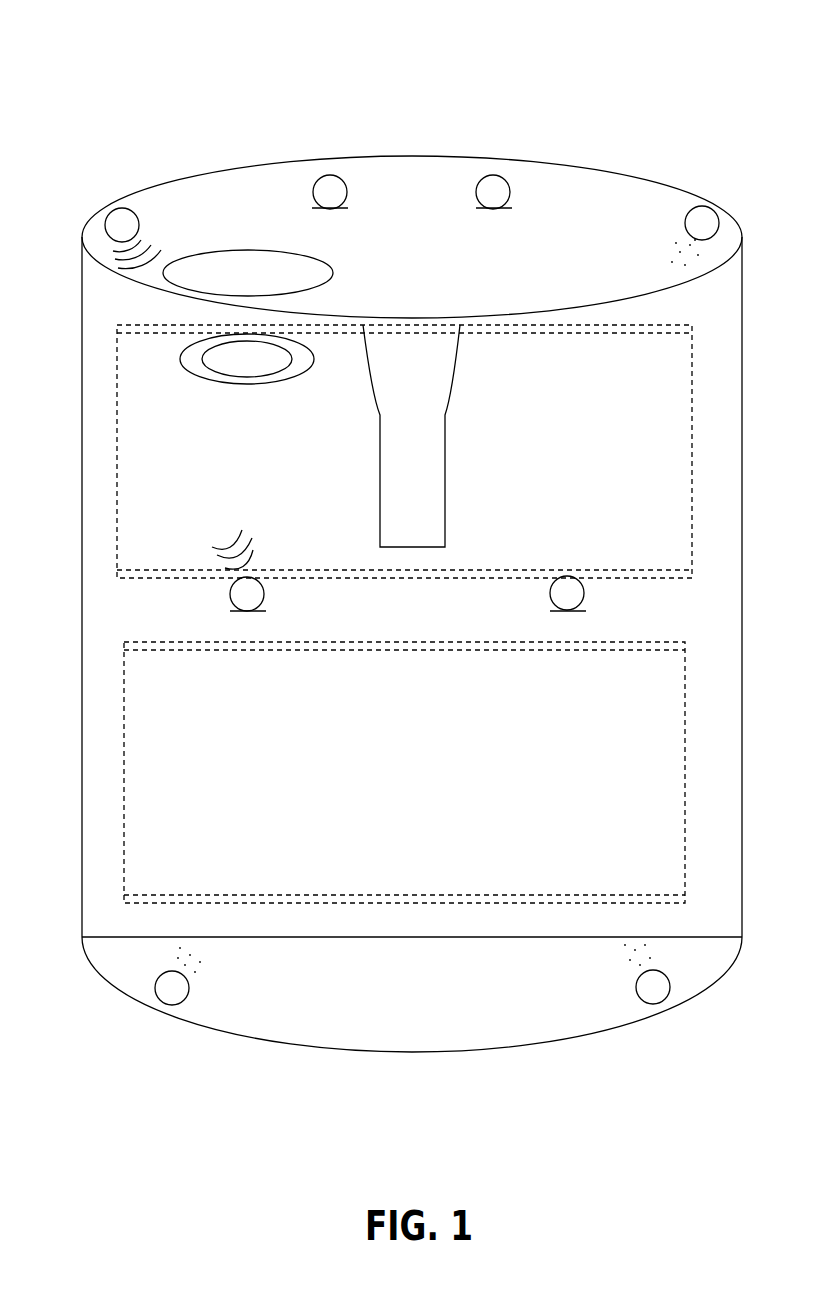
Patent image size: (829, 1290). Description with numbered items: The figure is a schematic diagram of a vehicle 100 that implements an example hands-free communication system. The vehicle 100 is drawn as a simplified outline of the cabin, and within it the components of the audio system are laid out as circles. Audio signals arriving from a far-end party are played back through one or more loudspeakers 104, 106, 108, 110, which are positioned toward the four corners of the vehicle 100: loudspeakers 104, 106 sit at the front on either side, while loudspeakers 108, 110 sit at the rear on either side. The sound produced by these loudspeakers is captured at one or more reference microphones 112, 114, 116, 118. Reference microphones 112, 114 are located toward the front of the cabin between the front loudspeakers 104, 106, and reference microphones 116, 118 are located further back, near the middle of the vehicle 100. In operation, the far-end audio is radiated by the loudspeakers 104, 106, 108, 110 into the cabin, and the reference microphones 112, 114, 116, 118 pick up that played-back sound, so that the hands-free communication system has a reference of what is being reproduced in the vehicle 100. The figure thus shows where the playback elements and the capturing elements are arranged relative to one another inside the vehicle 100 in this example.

The vehicle 100 is at (176, 61).
The loudspeaker 104 is at (114, 209).
The loudspeaker 106 is at (705, 207).
The loudspeaker 108 is at (160, 1006).
The loudspeaker 110 is at (665, 1005).
The reference microphone 112 is at (343, 210).
The reference microphone 114 is at (487, 210).
The reference microphone 116 is at (230, 600).
The reference microphone 118 is at (551, 600).